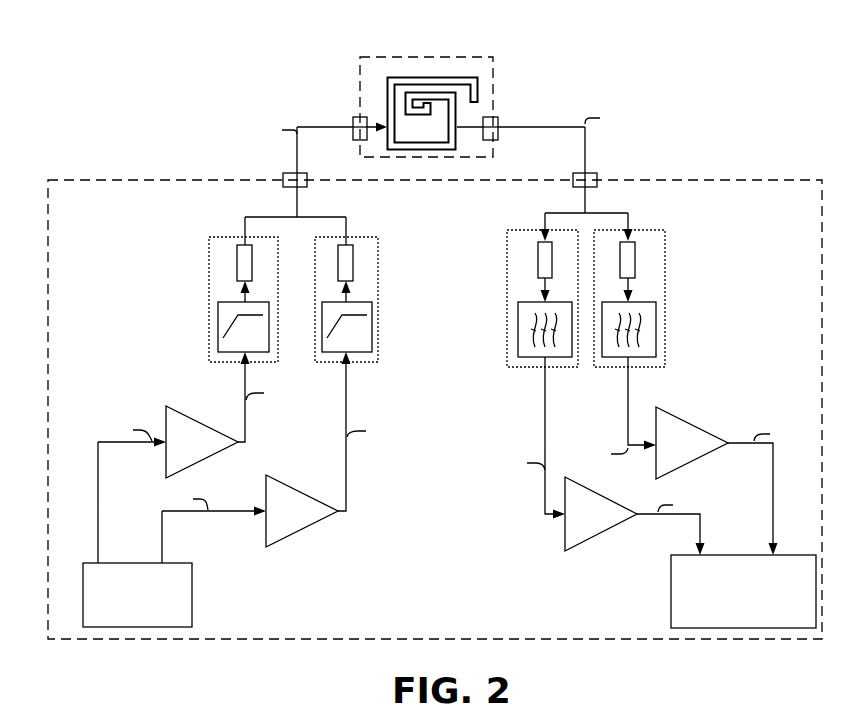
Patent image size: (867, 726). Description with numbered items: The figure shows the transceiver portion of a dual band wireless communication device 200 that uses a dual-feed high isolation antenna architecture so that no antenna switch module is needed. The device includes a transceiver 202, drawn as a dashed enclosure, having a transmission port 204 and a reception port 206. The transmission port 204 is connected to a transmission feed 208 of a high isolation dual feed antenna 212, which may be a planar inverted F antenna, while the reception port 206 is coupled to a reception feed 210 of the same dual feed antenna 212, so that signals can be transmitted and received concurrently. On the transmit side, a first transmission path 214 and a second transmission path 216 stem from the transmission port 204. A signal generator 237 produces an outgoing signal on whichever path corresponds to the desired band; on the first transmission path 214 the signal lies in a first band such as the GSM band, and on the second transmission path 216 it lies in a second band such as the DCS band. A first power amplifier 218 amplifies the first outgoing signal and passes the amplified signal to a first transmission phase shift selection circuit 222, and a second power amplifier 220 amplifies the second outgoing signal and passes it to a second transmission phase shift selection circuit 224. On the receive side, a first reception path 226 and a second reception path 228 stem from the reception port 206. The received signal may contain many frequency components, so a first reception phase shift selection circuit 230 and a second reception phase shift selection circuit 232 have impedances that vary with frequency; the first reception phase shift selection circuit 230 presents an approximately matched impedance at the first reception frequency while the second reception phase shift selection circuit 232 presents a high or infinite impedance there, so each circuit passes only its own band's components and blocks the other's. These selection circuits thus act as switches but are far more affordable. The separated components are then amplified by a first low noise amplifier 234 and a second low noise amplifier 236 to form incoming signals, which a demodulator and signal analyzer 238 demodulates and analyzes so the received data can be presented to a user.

The dual band wireless communication device 200 is at (689, 39).
The transceiver 202 is at (97, 180).
The transmission port 204 is at (284, 173).
The reception port 206 is at (595, 173).
The transmission feed 208 is at (355, 117).
The reception feed 210 is at (497, 117).
The dual feed antenna 212 is at (426, 57).
The first transmission path 214 is at (231, 208).
The second transmission path 216 is at (357, 208).
The first power amplifier 218 is at (166, 404).
The second power amplifier 220 is at (300, 532).
The first transmission phase shift selection circuit 222 is at (208, 296).
The second transmission phase shift selection circuit 224 is at (379, 306).
The first reception path 226 is at (521, 208).
The second reception path 228 is at (649, 208).
The first reception phase shift selection circuit 230 is at (507, 285).
The second reception phase shift selection circuit 232 is at (666, 295).
The first low noise amplifier 234 is at (600, 526).
The second low noise amplifier 236 is at (681, 415).
The signal generator 237 is at (193, 592).
The demodulator and signal analyzer 238 is at (671, 592).